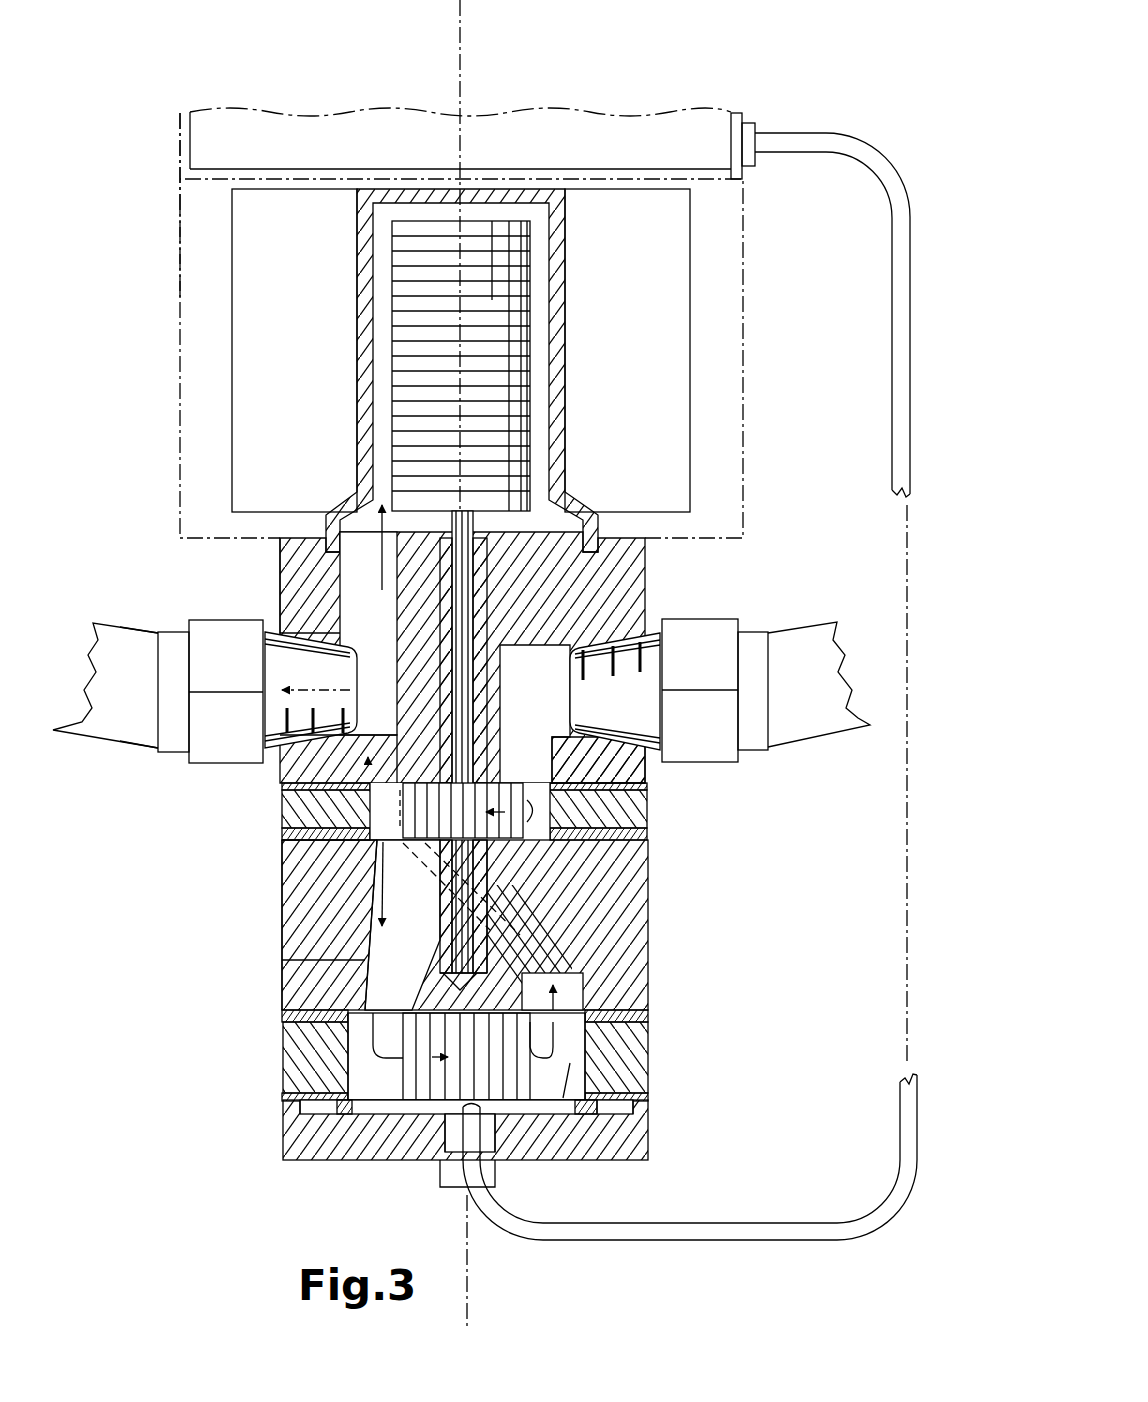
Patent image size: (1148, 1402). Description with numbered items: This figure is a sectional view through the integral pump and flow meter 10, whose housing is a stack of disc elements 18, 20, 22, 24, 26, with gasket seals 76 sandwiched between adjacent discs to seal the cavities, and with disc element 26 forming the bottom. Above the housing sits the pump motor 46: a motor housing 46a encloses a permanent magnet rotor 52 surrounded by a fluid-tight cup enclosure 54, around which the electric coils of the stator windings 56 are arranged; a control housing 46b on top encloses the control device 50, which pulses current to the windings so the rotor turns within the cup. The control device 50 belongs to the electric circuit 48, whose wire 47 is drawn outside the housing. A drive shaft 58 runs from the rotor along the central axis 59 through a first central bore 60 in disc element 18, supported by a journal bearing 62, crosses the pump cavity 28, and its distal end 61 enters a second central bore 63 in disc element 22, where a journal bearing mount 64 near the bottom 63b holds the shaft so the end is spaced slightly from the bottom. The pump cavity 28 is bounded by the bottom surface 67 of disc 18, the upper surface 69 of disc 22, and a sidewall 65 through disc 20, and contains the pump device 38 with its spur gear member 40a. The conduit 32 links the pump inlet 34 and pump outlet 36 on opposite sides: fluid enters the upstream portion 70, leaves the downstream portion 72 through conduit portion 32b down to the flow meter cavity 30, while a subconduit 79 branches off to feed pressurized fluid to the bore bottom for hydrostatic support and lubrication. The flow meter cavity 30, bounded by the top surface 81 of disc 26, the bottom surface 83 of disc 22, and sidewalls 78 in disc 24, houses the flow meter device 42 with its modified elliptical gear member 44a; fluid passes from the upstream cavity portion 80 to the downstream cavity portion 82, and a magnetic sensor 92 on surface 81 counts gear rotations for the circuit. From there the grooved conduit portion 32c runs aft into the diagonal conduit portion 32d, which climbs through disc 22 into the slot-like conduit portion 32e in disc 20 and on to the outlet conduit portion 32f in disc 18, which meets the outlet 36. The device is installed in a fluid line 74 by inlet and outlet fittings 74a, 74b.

The integral pump and flow meter 10 is at (793, 272).
The disc element 18 is at (650, 583).
The disc element 20 is at (650, 812).
The disc element 22 is at (650, 888).
The disc element 24 is at (650, 1073).
The disc element 26 is at (657, 1135).
The pump cavity 28 is at (553, 830).
The flow meter cavity 30 is at (565, 1062).
The conduit 32 is at (375, 961).
The second conduit portion 32b is at (370, 875).
The grooved conduit portion 32c is at (587, 993).
The diagonal conduit portion 32d is at (570, 940).
The slot-like conduit portion 32e is at (303, 765).
The outlet conduit portion 32f is at (363, 577).
The pump inlet 34 is at (640, 662).
The pump outlet 36 is at (300, 648).
The pump device 38 is at (518, 775).
The spur gear member 40a is at (411, 777).
The flow meter device 42 is at (422, 1110).
The modified elliptical gear member 44a is at (567, 1102).
The pump motor 46 is at (175, 380).
The motor housing 46a is at (176, 246).
The control housing 46b is at (176, 143).
The wire 47 is at (910, 214).
The electric circuit 48 is at (607, 1245).
The control device 50 is at (667, 128).
The permanent magnet rotor 52 is at (530, 257).
The fluid-tight cup enclosure 54 is at (565, 325).
The stator windings 56 is at (663, 381).
The drive shaft 58 is at (452, 627).
The central axis 59 is at (466, 46).
The first central bore 60 is at (487, 620).
The distal end 61 is at (443, 983).
The journal bearing 62 is at (487, 565).
The second central bore 63 is at (497, 931).
The bottom of the second central bore 63b is at (466, 1056).
The journal bearing mount 64 is at (403, 938).
The sidewall 65 is at (560, 818).
The bottom surface 67 is at (317, 818).
The upper surface 69 is at (530, 842).
The upstream portion 70 is at (540, 773).
The downstream portion 72 is at (367, 863).
The fluid line 74 is at (145, 750).
The inlet fitting 74a is at (710, 625).
The outlet fitting 74b is at (223, 630).
The gasket seals 76 is at (648, 785).
The sidewalls 78 is at (383, 1055).
The subconduit 79 is at (383, 885).
The upstream cavity portion 80 is at (363, 1043).
The top surface 81 is at (650, 1105).
The downstream cavity portion 82 is at (630, 1105).
The bottom surface 83 is at (570, 1063).
The magnetic sensor 92 is at (378, 1110).